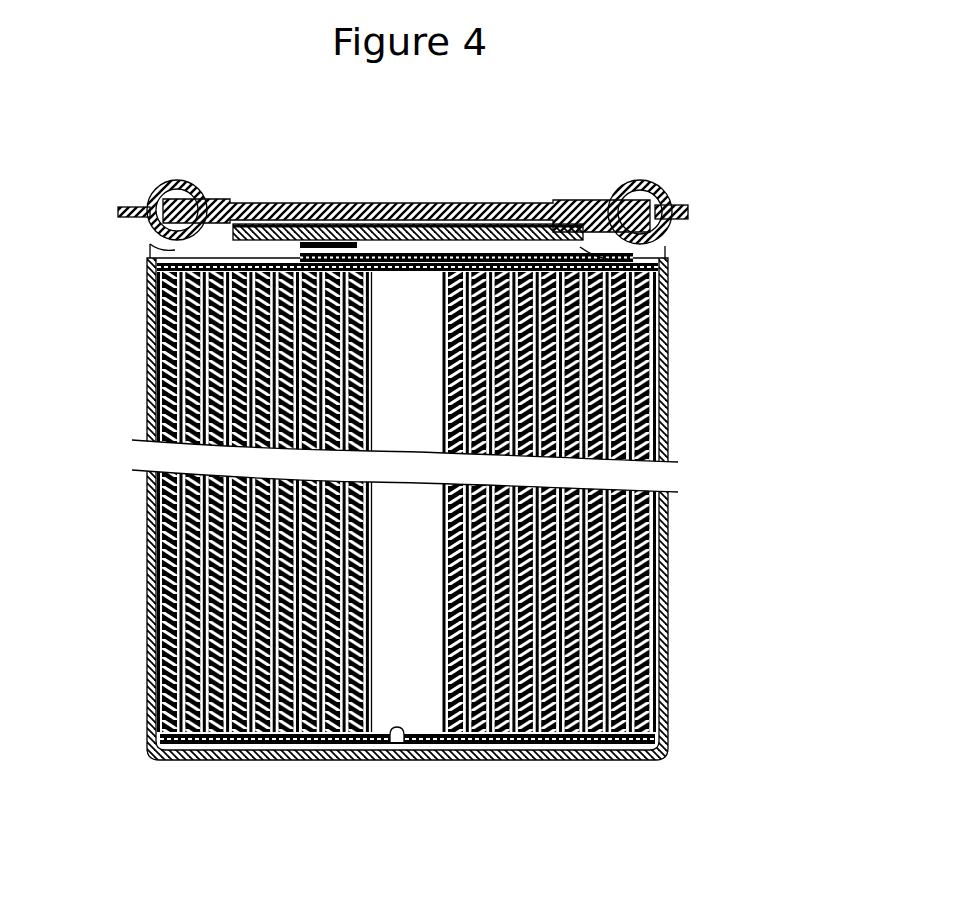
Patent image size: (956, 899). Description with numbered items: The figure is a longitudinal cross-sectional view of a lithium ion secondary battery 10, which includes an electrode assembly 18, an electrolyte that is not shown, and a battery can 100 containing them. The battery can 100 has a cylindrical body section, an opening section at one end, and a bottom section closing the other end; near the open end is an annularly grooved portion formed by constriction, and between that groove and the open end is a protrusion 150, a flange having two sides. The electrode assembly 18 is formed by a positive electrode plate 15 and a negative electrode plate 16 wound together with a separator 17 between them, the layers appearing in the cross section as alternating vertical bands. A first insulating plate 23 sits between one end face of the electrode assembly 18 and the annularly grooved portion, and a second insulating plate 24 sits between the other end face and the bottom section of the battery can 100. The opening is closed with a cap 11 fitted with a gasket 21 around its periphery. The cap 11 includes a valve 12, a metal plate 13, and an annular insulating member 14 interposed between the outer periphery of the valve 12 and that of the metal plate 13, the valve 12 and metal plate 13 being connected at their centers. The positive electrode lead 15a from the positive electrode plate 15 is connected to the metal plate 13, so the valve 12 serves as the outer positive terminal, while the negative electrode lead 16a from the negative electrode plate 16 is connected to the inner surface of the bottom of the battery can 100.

The lithium ion secondary battery 10 is at (105, 103).
The cap 11 is at (500, 216).
The valve 12 is at (443, 205).
The metal plate 13 is at (683, 220).
The annular insulating member 14 is at (558, 202).
The positive electrode plate 15 is at (628, 523).
The positive electrode lead 15a is at (418, 265).
The negative electrode plate 16 is at (640, 574).
The negative electrode lead 16a is at (389, 746).
The separator 17 is at (628, 623).
The electrode assembly 18 is at (497, 497).
The gasket 21 is at (145, 200).
The first insulating plate 23 is at (150, 243).
The second insulating plate 24 is at (572, 757).
The battery can 100 is at (143, 418).
The protrusion 150 is at (120, 213).